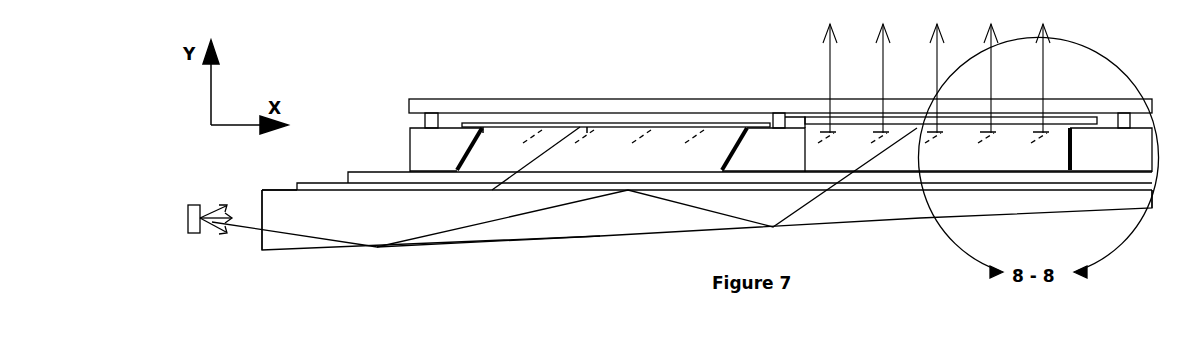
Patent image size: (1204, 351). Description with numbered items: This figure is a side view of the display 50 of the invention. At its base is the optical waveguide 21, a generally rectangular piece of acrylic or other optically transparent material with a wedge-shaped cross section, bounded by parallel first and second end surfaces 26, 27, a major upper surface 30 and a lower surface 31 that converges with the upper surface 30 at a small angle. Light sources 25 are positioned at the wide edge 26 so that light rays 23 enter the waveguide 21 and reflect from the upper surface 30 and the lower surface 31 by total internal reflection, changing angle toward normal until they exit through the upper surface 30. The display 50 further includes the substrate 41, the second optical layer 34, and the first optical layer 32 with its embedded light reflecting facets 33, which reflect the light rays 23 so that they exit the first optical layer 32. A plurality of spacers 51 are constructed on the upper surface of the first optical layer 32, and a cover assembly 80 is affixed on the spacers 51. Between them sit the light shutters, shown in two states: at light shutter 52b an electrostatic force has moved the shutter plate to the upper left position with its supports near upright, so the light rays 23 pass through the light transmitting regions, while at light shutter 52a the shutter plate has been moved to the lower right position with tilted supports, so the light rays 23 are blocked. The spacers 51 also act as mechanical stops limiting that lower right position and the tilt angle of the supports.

The optical waveguide 21 is at (531, 228).
The light rays 23 is at (537, 157).
The light sources 25 is at (195, 229).
The first end surface 26 is at (262, 244).
The second end surface 27 is at (1157, 207).
The upper surface 30 is at (268, 189).
The lower surface 31 is at (470, 246).
The first optical layer 32 is at (428, 147).
The embedded light reflecting facets 33 is at (532, 137).
The second optical layer 34 is at (307, 183).
The substrate 41 is at (377, 172).
The display 50 is at (334, 79).
The spacers 51 is at (432, 120).
The light shutter 52a is at (606, 125).
The light shutter 52b is at (843, 118).
The cover assembly 80 is at (697, 84).